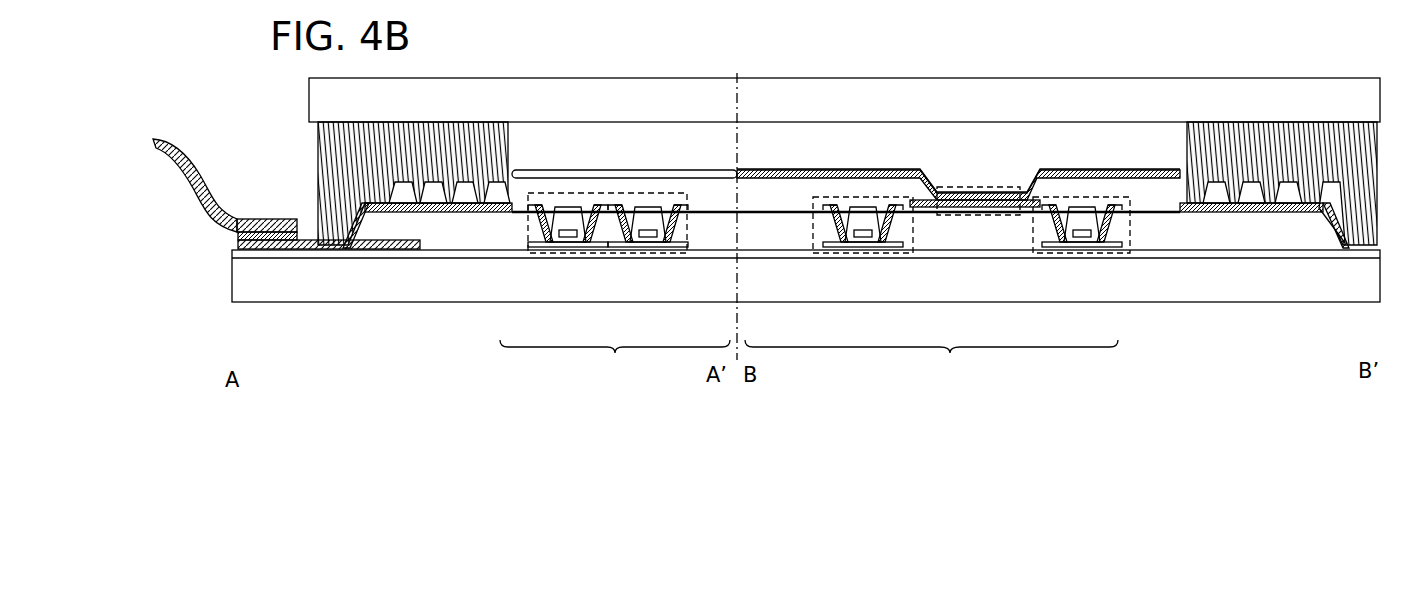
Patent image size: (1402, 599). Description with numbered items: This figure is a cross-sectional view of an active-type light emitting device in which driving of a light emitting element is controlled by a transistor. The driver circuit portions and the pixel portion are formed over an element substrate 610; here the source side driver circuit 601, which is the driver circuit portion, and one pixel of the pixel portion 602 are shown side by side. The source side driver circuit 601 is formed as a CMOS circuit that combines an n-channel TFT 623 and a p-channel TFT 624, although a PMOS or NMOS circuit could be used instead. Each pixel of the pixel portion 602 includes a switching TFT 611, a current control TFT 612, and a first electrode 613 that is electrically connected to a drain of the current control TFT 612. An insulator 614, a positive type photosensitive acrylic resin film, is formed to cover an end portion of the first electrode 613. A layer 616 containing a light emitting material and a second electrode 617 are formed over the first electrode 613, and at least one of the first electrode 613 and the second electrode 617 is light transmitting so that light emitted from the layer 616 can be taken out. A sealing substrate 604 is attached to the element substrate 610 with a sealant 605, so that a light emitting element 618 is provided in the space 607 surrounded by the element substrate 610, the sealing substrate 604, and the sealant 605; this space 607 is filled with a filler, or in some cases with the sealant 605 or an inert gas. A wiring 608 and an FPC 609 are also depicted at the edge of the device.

The driver circuit portion 601 is at (615, 195).
The pixel portion 602 is at (931, 363).
The sealing substrate 604 is at (647, 92).
The sealant 605 is at (1218, 137).
The space 607 is at (563, 138).
The wiring 608 is at (337, 248).
The FPC (flexible printed circuit) 609 is at (170, 136).
The element substrate 610 is at (1276, 290).
The switching TFT 611 is at (830, 253).
The current control TFT 612 is at (1120, 253).
The first electrode 613 is at (943, 212).
The insulator 614 is at (778, 193).
The layer containing a light emitting material 616 is at (870, 172).
The second electrode 617 is at (1132, 173).
The light emitting element 618 is at (998, 217).
The n-channel TFT 623 is at (528, 227).
The p-channel TFT 624 is at (525, 292).